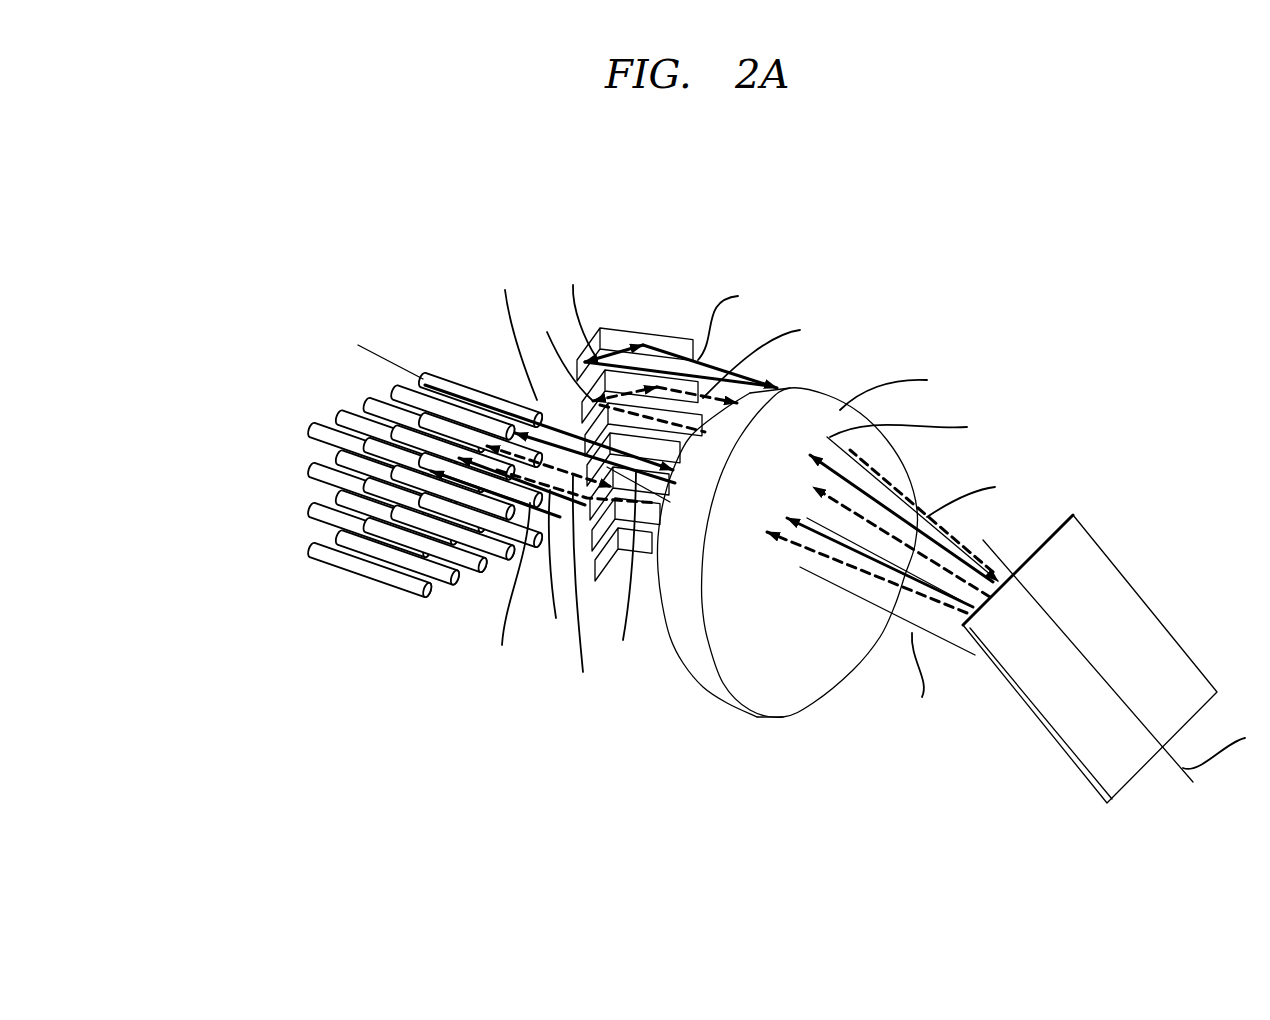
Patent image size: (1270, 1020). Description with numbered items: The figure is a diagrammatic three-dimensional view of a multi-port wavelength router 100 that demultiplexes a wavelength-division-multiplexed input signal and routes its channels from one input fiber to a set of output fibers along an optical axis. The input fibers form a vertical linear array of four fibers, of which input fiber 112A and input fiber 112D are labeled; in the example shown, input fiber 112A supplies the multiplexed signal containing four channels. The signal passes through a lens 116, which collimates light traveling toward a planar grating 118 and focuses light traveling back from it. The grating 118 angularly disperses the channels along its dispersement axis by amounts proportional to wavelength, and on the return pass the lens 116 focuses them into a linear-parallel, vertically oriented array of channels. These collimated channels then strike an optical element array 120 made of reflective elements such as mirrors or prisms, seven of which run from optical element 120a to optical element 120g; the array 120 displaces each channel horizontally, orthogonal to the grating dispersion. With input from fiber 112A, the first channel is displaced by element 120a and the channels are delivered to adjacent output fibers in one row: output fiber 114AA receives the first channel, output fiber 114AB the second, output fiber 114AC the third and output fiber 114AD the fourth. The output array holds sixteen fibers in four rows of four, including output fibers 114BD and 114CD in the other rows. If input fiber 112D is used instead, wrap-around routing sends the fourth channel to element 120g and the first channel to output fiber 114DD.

The multi-port router 100 is at (1000, 366).
The input fiber 112A is at (437, 370).
The input fiber 112D is at (538, 540).
The output fiber 114AA is at (410, 372).
The output fiber 114AB is at (367, 405).
The output fiber 114AC is at (338, 417).
The output fiber 114AD is at (310, 431).
The output fiber 114BD is at (310, 469).
The output fiber 114CD is at (310, 509).
The output fiber 114DD is at (310, 549).
The lens 116 is at (803, 397).
The grating 118 is at (1090, 562).
The optical element array 120 is at (639, 450).
The optical element 120a is at (624, 328).
The optical element 120g is at (642, 545).